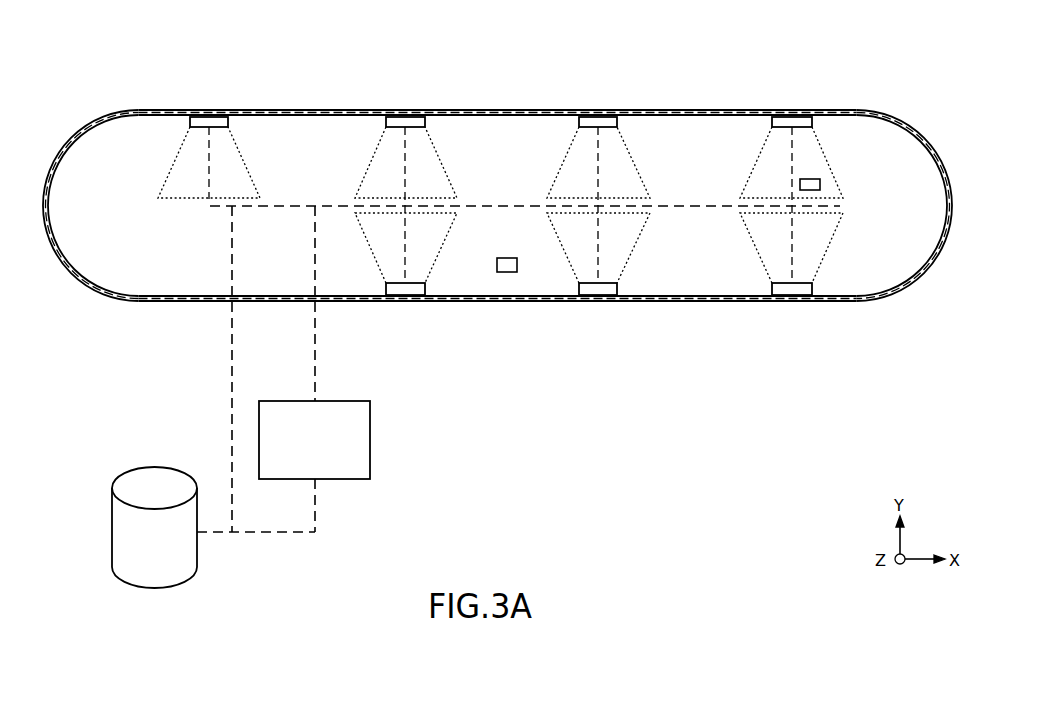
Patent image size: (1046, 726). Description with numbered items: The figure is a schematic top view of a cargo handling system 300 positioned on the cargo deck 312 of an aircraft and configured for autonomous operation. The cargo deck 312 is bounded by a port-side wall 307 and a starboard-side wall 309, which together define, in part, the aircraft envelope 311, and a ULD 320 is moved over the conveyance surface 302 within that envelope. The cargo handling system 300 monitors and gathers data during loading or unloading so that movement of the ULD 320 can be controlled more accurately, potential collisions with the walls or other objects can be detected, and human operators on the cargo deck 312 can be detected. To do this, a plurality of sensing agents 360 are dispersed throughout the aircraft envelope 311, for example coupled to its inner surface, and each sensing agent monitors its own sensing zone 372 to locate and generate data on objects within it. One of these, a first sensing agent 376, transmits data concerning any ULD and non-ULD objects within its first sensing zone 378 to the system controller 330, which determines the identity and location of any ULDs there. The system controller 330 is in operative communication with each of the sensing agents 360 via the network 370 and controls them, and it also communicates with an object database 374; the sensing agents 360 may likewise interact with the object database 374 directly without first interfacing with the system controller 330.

The cargo handling system 300 is at (306, 56).
The conveyance surface 302 is at (708, 153).
The port-side wall 307 is at (633, 302).
The starboard-side wall 309 is at (660, 110).
The aircraft envelope 311 is at (478, 110).
The cargo deck 312 is at (518, 159).
The ULD 320 is at (507, 272).
The system controller 330 is at (370, 427).
The sensing agents 360 is at (205, 117).
The network 370 is at (680, 207).
The sensing zone 372 is at (180, 150).
The object database 374 is at (113, 518).
The first sensing agent 376 is at (792, 117).
The first sensing zone 378 is at (822, 150).